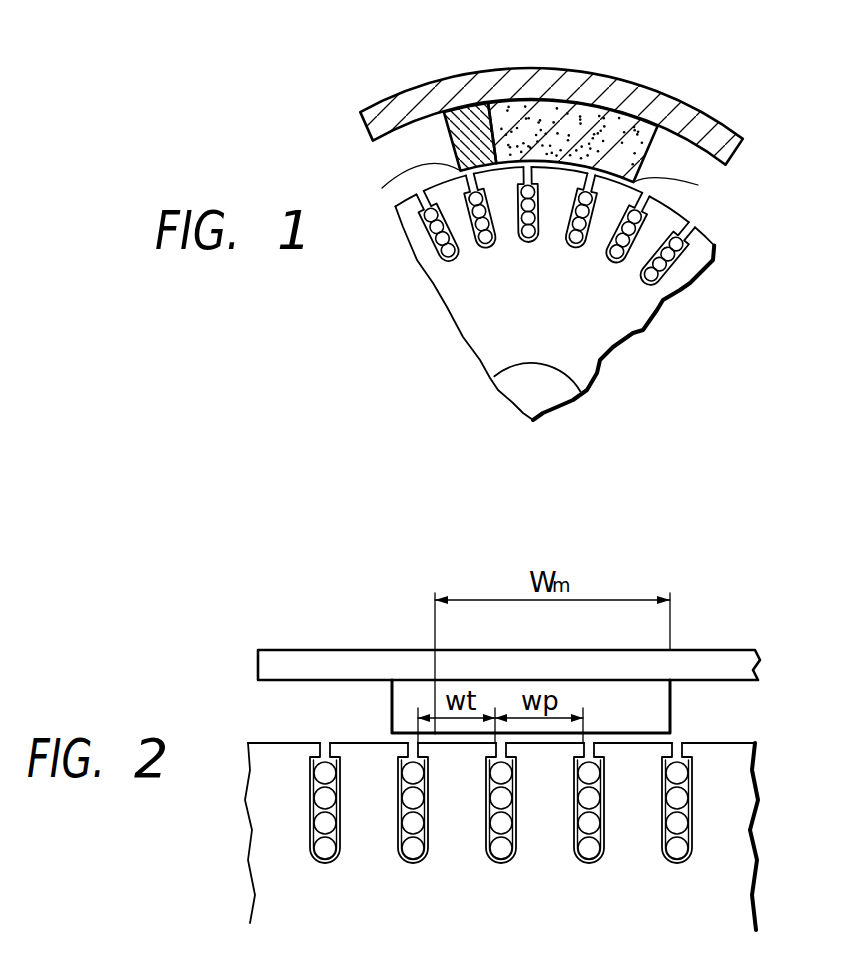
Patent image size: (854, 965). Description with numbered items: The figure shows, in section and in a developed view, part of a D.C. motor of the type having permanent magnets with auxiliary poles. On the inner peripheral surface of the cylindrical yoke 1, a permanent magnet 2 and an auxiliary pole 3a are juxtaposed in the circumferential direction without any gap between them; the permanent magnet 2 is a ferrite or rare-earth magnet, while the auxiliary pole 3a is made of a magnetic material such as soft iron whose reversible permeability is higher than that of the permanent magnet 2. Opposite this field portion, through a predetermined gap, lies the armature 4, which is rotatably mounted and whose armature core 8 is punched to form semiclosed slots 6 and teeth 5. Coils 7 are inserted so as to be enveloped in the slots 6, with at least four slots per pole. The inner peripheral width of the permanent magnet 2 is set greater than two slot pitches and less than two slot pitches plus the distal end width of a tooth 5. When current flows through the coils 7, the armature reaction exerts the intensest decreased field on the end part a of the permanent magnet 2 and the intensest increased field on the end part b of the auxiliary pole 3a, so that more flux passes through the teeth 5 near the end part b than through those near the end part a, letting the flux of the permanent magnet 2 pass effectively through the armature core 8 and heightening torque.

In FIG. 1, the yoke 1 is at (495, 90).
In FIG. 2, the yoke 1 is at (387, 657).
In FIG. 1, the permanent magnet 2 is at (631, 117).
In FIG. 2, the permanent magnet 2 is at (620, 692).
In FIG. 1, the auxiliary pole 3a is at (460, 117).
In FIG. 2, the auxiliary pole 3a is at (400, 697).
In FIG. 1, the armature 4 is at (655, 330).
In FIG. 1, the tooth 5 is at (553, 225).
In FIG. 1, the slot 6 is at (433, 242).
In FIG. 2, the slot 6 is at (397, 847).
In FIG. 1, the coil 7 is at (678, 250).
In FIG. 2, the coil 7 is at (672, 800).
In FIG. 1, the armature core 8 is at (473, 328).
In FIG. 2, the armature core 8 is at (710, 878).
In FIG. 1, the end part of the permanent magnet a is at (680, 182).
In FIG. 1, the end part of the auxiliary pole b is at (411, 184).